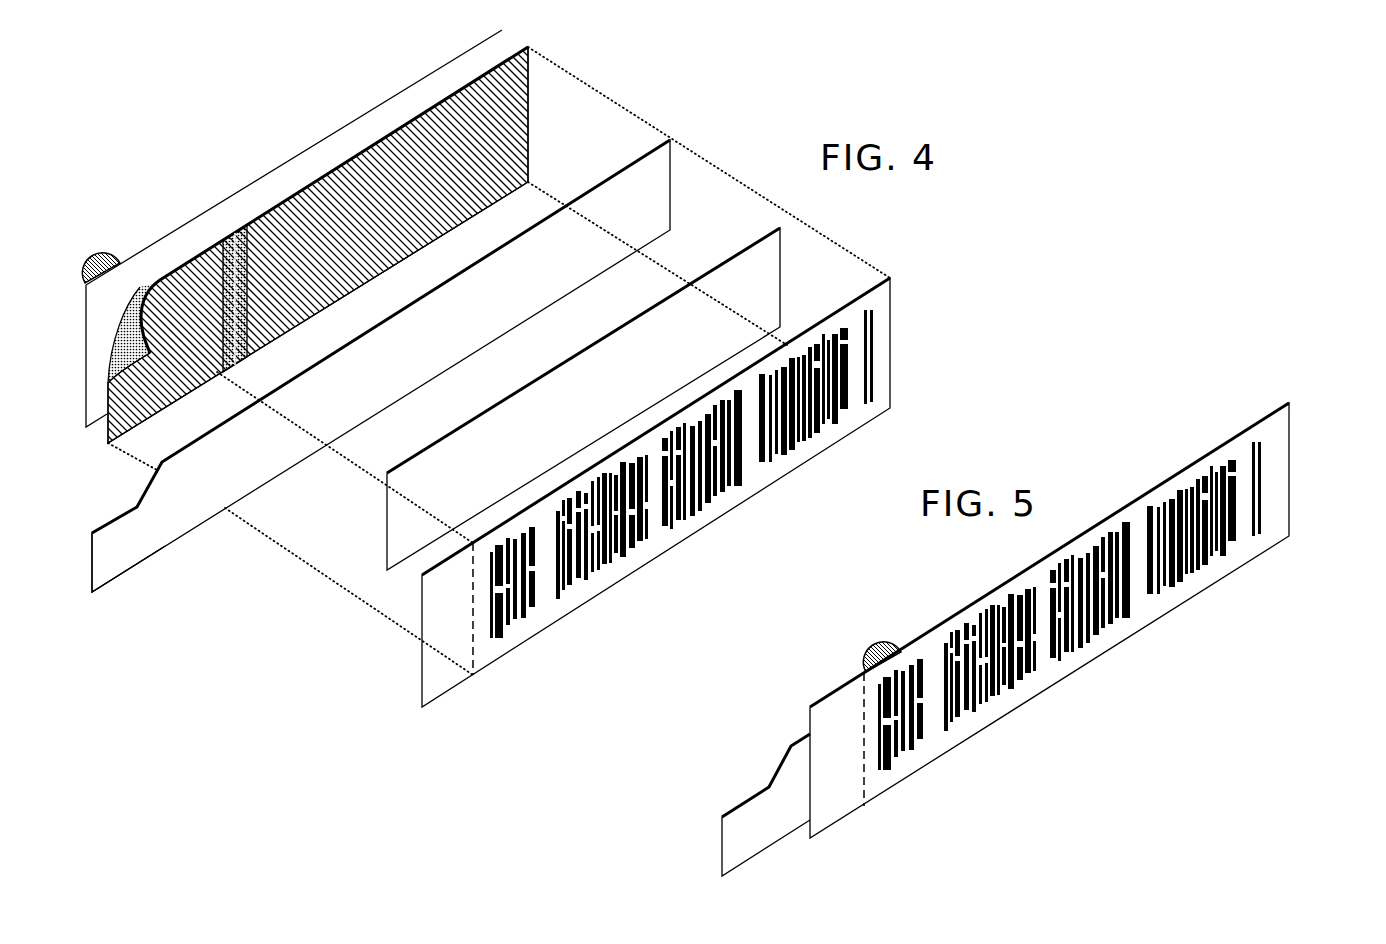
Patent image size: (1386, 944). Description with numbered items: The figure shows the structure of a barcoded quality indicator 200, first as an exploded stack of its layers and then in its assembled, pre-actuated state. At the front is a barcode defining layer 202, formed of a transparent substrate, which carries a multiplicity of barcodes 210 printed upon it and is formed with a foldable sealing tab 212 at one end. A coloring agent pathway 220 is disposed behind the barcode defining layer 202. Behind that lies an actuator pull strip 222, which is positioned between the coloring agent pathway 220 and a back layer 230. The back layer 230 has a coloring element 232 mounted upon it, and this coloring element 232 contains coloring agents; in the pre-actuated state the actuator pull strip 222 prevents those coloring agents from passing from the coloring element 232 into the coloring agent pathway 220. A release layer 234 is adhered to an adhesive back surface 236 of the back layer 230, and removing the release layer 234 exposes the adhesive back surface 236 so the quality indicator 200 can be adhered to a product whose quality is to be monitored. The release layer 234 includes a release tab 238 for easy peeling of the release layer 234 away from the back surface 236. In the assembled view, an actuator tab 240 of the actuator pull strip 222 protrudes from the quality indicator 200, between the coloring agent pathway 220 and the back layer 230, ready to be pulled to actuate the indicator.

In FIG. 5, the barcoded quality indicator 200 is at (1042, 639).
In FIG. 4, the barcode defining layer 202 is at (878, 330).
In FIG. 5, the barcode defining layer 202 is at (1283, 438).
In FIG. 4, the barcodes 210 is at (519, 551).
In FIG. 5, the barcodes 210 is at (1270, 508).
In FIG. 4, the foldable sealing tab 212 is at (437, 668).
In FIG. 5, the foldable sealing tab 212 is at (832, 708).
In FIG. 4, the coloring agent pathway 220 is at (770, 272).
In FIG. 4, the actuator pull strip 222 is at (653, 203).
In FIG. 4, the back layer 230 is at (316, 210).
In FIG. 4, the coloring element 232 is at (237, 238).
In FIG. 4, the release layer 234 is at (362, 132).
In FIG. 4, the adhesive back surface 236 is at (140, 287).
In FIG. 4, the release tab 238 is at (97, 257).
In FIG. 5, the release tab 238 is at (883, 632).
In FIG. 4, the actuator tab 240 is at (108, 524).
In FIG. 5, the actuator tab 240 is at (788, 766).